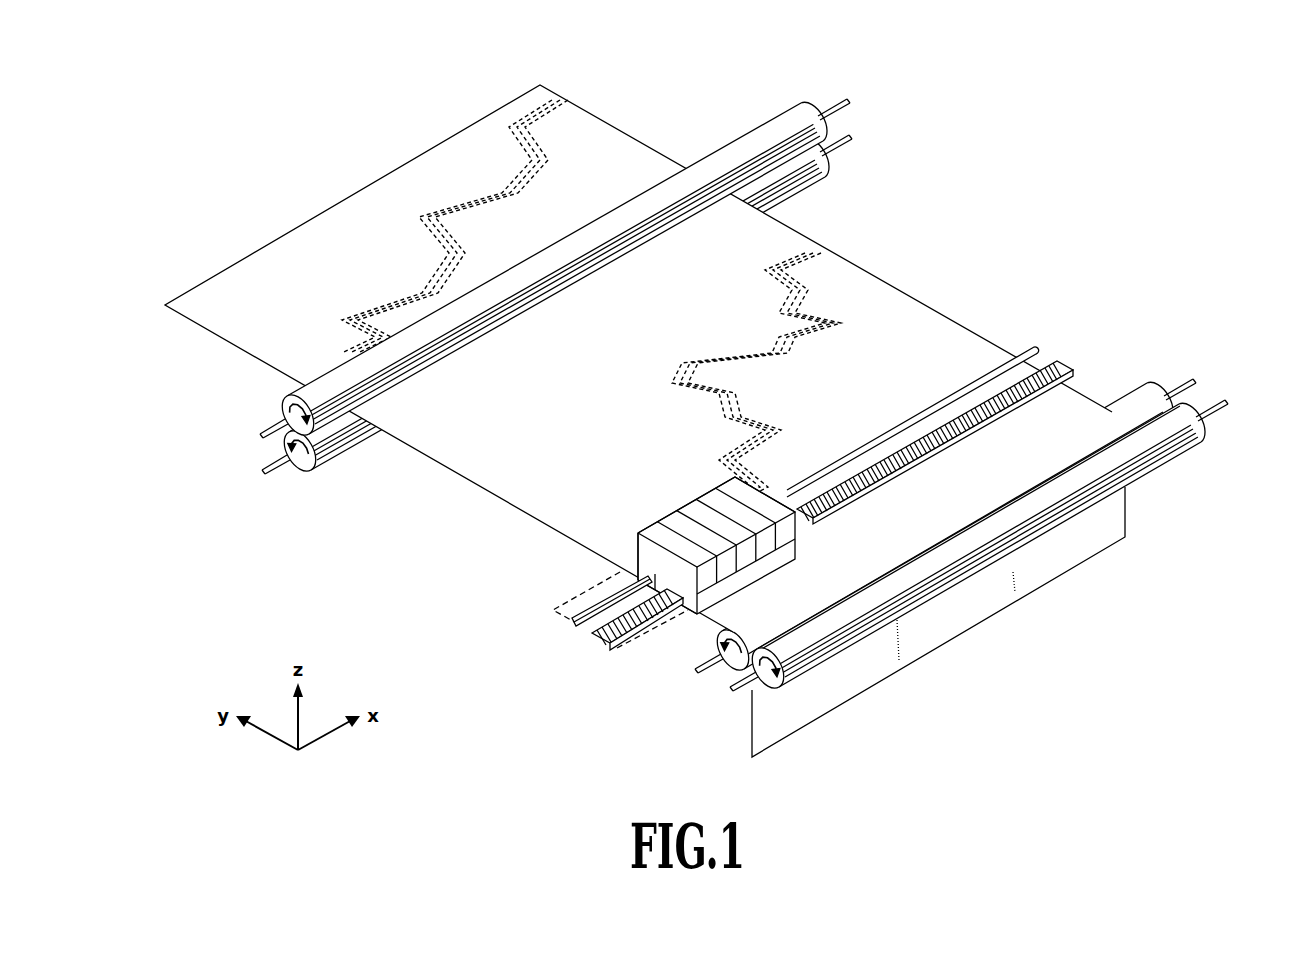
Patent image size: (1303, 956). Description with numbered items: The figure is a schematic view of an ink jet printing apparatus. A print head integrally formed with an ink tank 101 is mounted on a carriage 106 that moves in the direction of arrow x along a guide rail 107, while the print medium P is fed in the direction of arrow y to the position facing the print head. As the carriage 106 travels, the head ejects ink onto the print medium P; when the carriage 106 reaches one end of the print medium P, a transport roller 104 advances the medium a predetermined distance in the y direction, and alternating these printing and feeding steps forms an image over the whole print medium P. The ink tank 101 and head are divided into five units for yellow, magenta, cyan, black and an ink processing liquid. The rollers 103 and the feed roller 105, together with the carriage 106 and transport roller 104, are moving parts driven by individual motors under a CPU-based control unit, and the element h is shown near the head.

The ink tank 101 is at (723, 513).
The feed roller 103 is at (814, 164).
The transport roller 104 is at (799, 125).
The feed roller 105 is at (1136, 397).
The carriage 106 is at (803, 549).
The guide rail 107 is at (1036, 347).
The print medium P is at (475, 168).
The heater h is at (553, 610).